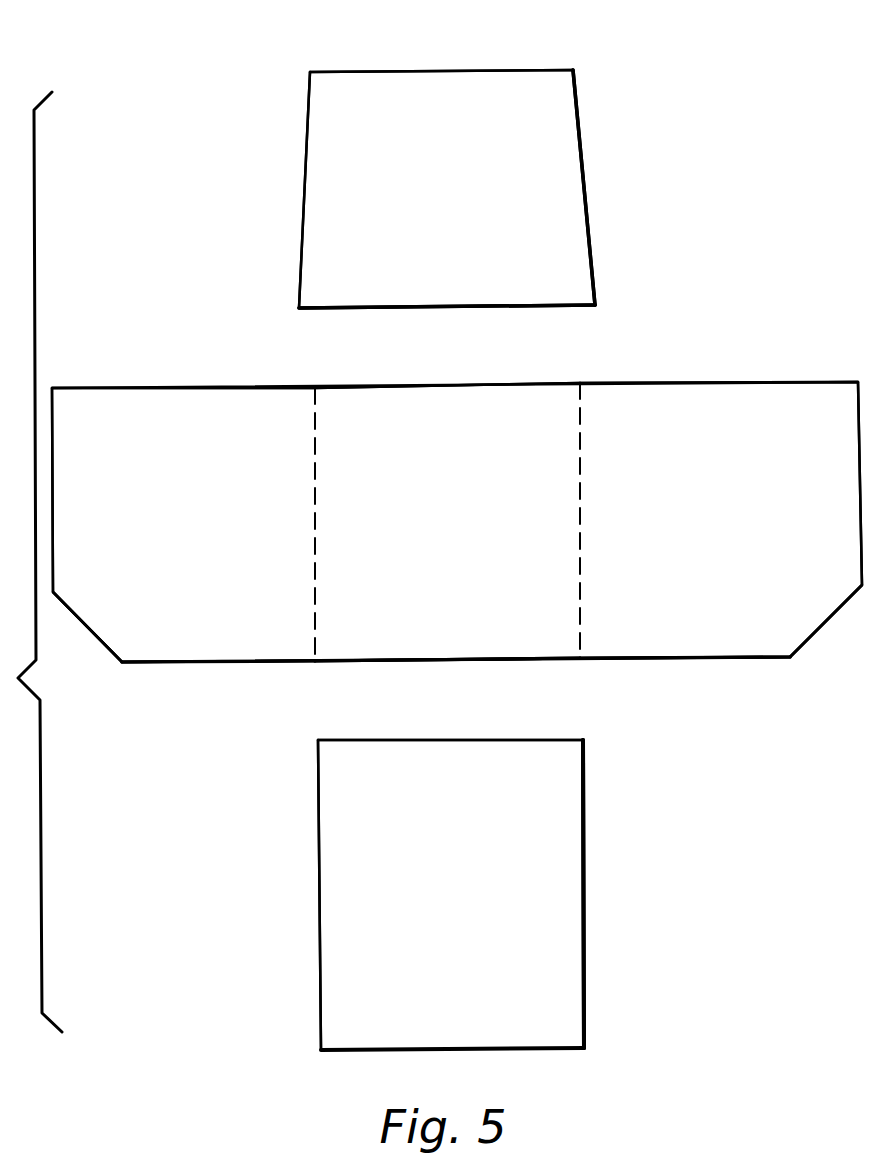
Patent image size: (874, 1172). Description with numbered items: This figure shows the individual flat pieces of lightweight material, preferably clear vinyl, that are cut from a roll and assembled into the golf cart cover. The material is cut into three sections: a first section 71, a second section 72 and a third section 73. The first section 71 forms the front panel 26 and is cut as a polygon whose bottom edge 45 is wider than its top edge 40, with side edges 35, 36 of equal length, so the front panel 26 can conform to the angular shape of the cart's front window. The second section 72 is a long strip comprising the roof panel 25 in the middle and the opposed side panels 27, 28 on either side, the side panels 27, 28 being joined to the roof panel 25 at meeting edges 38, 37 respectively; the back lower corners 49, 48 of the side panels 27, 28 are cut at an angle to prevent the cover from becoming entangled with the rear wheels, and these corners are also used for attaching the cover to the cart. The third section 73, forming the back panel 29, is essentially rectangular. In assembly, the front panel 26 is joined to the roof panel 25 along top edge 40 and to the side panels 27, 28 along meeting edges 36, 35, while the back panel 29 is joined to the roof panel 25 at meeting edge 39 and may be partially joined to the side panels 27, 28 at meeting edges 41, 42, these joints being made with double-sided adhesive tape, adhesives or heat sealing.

The roof panel 25 is at (447, 522).
The front panel 26 is at (447, 189).
The side panel 27 is at (183, 525).
The side panel 28 is at (721, 520).
The back panel 29 is at (451, 895).
The meeting edge 35 is at (584, 165).
The meeting edge 36 is at (300, 185).
The meeting edge 37 is at (580, 567).
The meeting edge 38 is at (315, 570).
The meeting edge 39 is at (418, 663).
The meeting edge 40 is at (477, 70).
The meeting edge 41 is at (212, 662).
The meeting edge 42 is at (655, 660).
The bottom edge 45 is at (515, 308).
The back corner 48 is at (818, 632).
The back corner 49 is at (108, 650).
The first section 71 is at (650, 197).
The second section 72 is at (103, 345).
The third section 73 is at (662, 928).